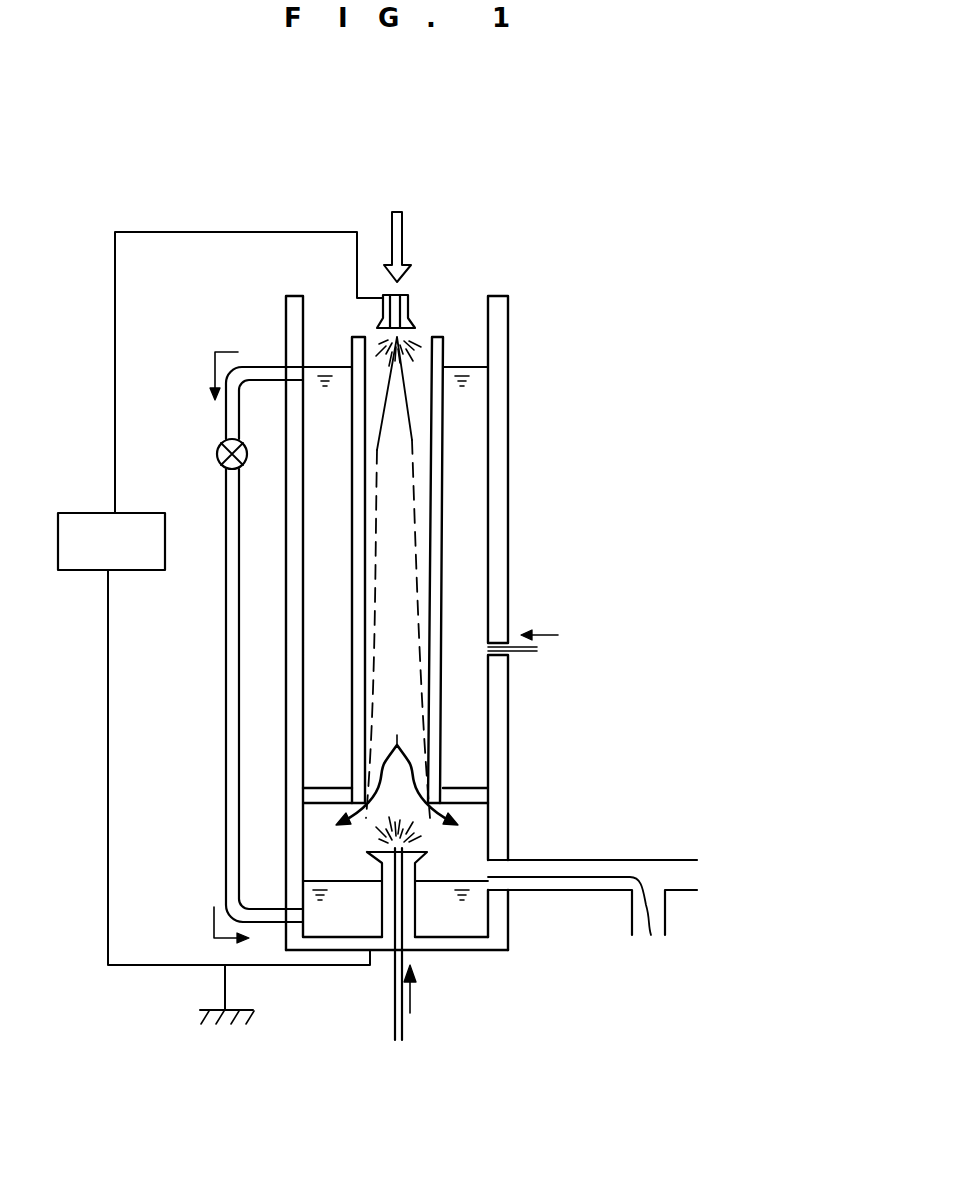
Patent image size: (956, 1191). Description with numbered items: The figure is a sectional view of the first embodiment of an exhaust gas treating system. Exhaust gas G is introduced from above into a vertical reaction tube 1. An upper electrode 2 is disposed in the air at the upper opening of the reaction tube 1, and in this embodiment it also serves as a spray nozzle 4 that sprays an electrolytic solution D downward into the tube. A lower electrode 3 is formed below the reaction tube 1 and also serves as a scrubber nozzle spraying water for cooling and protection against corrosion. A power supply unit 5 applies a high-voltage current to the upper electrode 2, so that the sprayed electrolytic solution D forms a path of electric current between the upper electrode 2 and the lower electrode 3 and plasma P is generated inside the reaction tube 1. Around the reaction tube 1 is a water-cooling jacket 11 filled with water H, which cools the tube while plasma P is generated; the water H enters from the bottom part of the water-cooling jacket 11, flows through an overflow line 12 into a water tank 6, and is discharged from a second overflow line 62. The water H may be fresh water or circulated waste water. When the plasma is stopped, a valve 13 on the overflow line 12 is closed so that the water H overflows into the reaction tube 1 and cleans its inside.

The reaction tube 1 is at (438, 415).
The upper electrode 2 is at (385, 330).
The spray nozzle 4 is at (318, 246).
The lower electrode 3 is at (404, 863).
The power supply unit 5 is at (77, 523).
The water tank 6 is at (328, 917).
The water-cooling jacket 11 is at (478, 445).
The overflow line 12 is at (230, 493).
The valve 13 is at (217, 450).
The overflow line 62 is at (640, 860).
The exhaust gas G is at (398, 212).
The electrolytic solution D is at (428, 332).
The plasma P is at (418, 516).
The water H is at (470, 566).